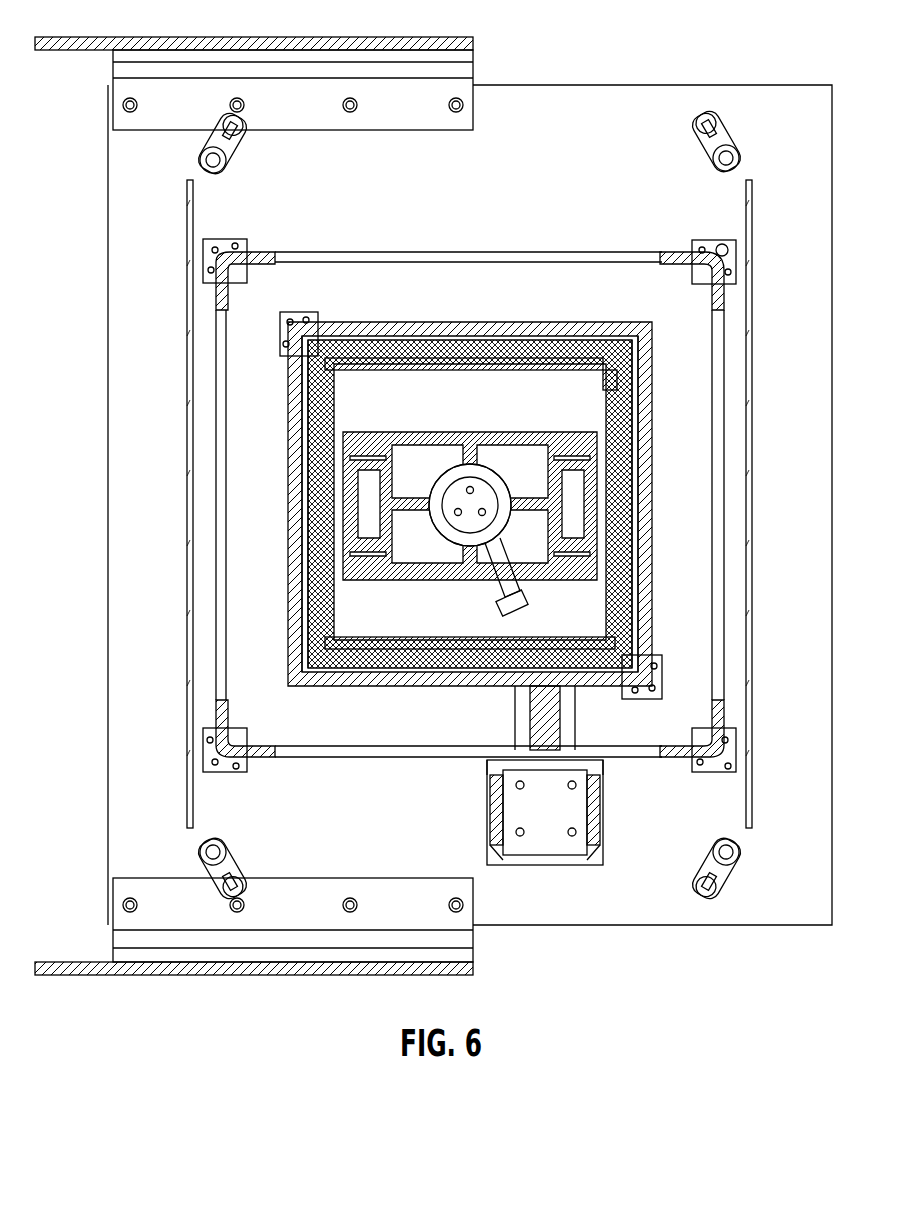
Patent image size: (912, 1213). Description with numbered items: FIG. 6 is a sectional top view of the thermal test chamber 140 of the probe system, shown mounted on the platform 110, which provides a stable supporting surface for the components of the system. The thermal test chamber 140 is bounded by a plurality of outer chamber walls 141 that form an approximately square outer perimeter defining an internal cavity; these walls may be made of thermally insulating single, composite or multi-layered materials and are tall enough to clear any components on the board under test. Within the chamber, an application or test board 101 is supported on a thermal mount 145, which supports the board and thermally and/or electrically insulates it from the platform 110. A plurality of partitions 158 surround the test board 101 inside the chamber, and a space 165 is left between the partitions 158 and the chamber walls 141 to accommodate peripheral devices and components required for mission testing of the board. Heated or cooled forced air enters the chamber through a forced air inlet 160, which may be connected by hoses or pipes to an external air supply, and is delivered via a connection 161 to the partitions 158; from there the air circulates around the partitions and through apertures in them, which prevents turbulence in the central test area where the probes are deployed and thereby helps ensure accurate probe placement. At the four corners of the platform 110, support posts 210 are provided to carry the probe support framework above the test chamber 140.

The platform 110 is at (568, 95).
The support posts 210 is at (190, 160).
The thermal test chamber 140 is at (588, 240).
The outer chamber walls 141 is at (488, 252).
The partitions 158 is at (475, 322).
The space 165 is at (274, 507).
The application or test board 101 is at (372, 432).
The thermal mount 145 is at (470, 488).
The connection 161 is at (555, 722).
The forced air inlet 160 is at (565, 805).